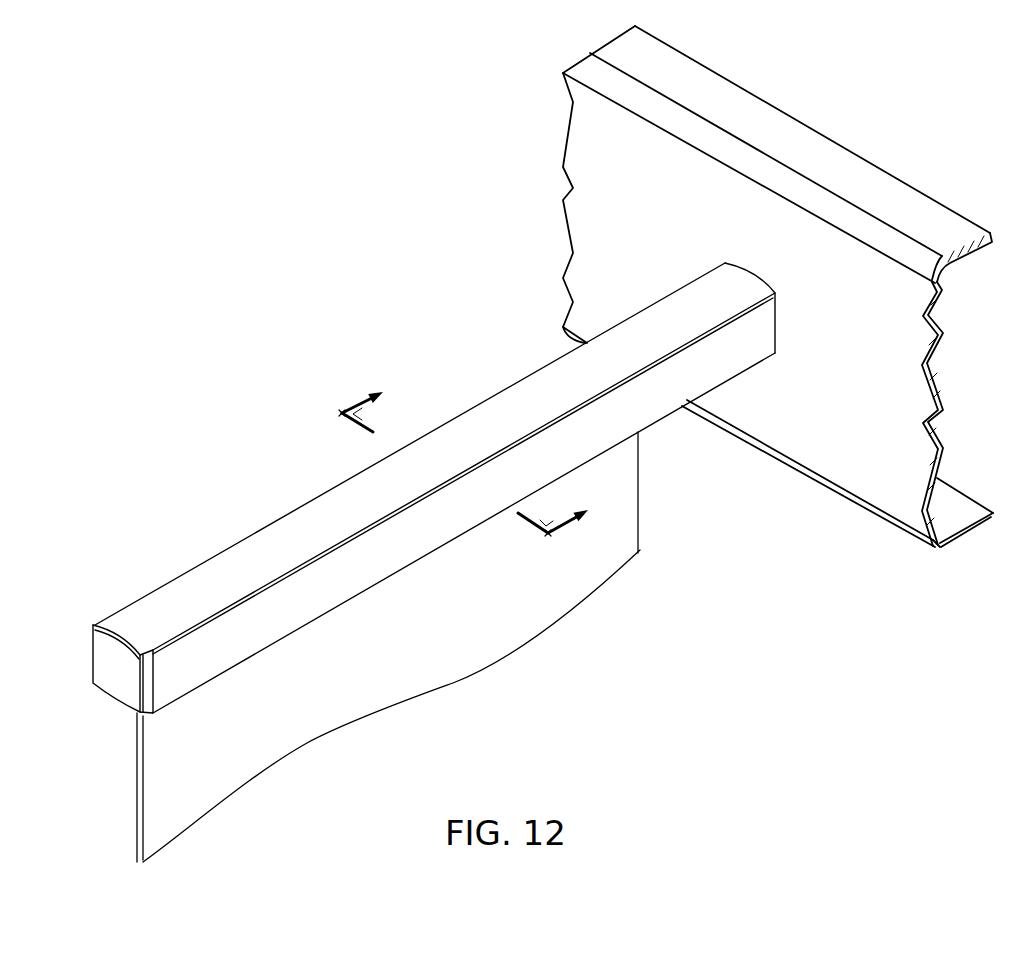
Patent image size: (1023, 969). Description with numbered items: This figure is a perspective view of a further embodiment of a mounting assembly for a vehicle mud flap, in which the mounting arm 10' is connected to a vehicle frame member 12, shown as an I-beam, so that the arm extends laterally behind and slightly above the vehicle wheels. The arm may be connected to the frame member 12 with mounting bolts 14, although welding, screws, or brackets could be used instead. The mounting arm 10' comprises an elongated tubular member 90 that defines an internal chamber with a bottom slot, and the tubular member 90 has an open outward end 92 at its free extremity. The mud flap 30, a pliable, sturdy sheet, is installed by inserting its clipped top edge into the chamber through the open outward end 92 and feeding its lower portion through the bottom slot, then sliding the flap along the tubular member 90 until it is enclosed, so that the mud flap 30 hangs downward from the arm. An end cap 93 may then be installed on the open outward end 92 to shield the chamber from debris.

The mounting arm 10' is at (522, 444).
The vehicle frame member 12 is at (835, 467).
The mounting bolts 14 is at (482, 449).
The mud flap 30 is at (487, 647).
The tubular member 90 is at (523, 393).
The open outward end 92 is at (132, 618).
The end cap 93 is at (120, 683).